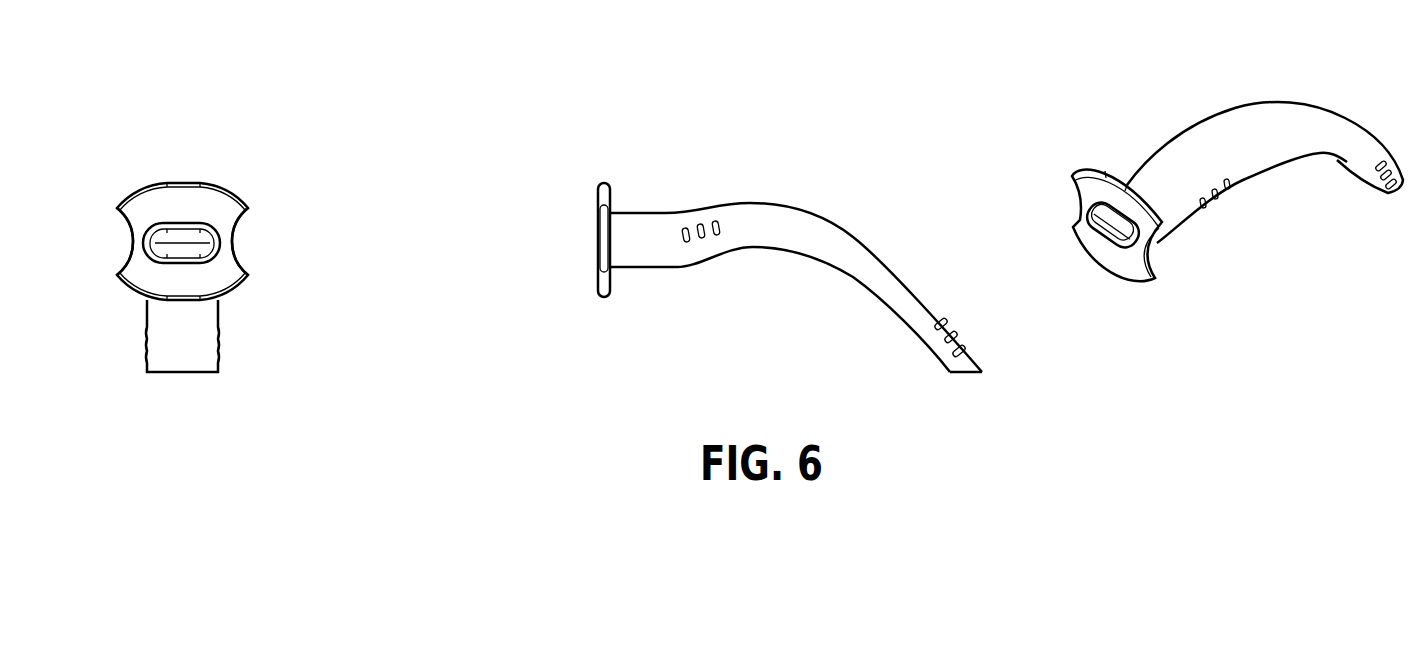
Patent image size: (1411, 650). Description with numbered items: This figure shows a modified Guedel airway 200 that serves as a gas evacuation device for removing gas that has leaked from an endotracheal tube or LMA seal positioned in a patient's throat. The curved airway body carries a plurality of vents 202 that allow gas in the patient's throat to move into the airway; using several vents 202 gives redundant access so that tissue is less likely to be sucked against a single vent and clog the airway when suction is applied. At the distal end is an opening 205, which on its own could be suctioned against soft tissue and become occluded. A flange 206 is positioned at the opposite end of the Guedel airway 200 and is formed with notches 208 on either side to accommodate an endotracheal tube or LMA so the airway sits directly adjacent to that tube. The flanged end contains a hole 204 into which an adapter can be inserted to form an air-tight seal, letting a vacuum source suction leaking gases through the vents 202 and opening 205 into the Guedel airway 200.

The Guedel airway 200 is at (262, 93).
The vents 202 is at (218, 353).
The hole 204 is at (205, 246).
The opening 205 is at (963, 372).
The flange 206 is at (598, 194).
The notches 208 is at (135, 241).